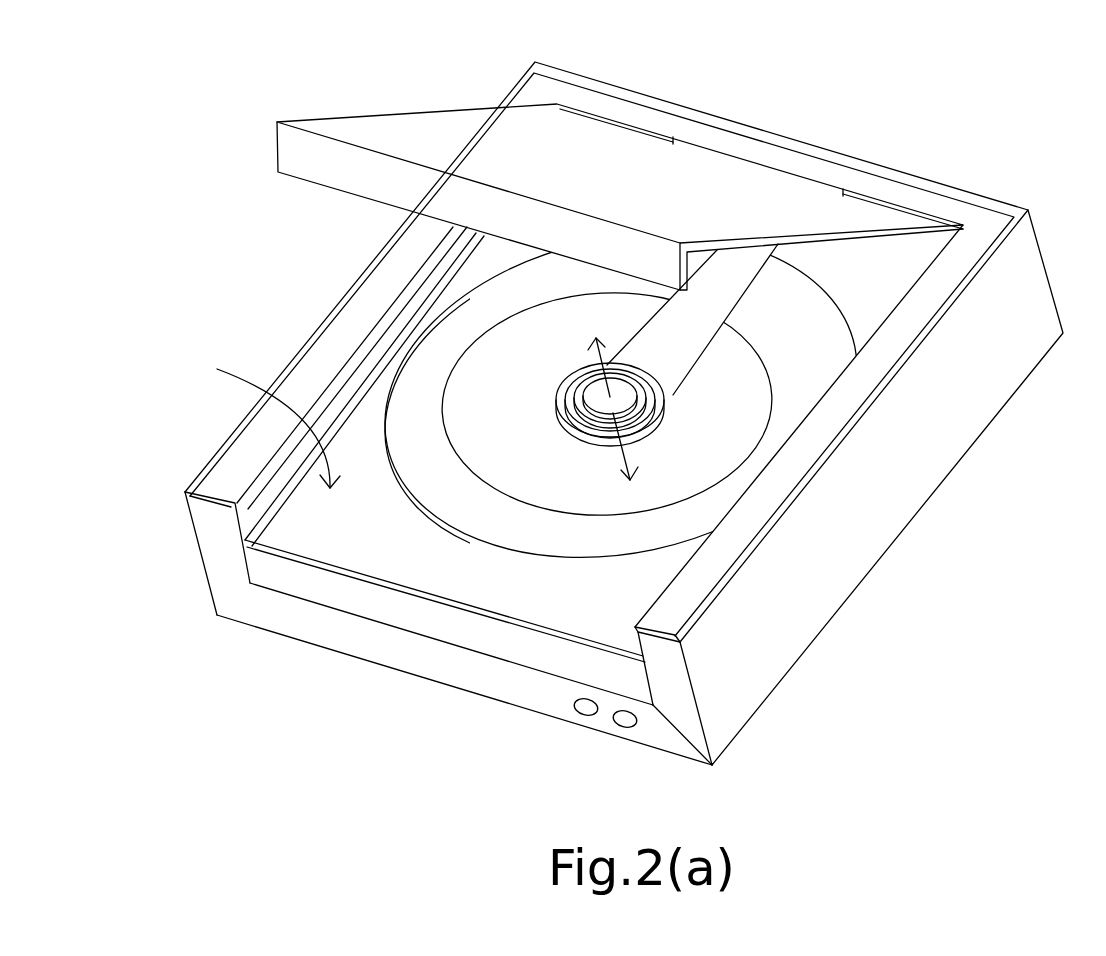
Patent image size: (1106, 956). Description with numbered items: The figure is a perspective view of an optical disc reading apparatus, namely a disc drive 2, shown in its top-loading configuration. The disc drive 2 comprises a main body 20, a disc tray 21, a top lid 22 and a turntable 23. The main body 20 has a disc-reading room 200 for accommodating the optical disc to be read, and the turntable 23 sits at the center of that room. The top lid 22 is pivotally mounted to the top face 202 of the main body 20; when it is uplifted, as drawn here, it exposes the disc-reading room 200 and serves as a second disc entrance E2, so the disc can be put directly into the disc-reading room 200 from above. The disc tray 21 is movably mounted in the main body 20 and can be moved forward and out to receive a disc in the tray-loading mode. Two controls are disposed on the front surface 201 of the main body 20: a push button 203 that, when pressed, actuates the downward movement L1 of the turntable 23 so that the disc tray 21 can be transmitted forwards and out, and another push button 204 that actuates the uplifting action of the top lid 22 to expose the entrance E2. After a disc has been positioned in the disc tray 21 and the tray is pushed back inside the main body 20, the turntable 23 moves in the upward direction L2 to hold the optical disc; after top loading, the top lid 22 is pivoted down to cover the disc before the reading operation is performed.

The disc drive 2 is at (954, 67).
The main body 20 is at (805, 603).
The disc-reading room 200 is at (508, 520).
The front surface 201 is at (283, 613).
The top face 202 is at (980, 225).
The push button 203 is at (575, 703).
The push button 204 is at (628, 722).
The disc tray 21 is at (497, 640).
The top lid 22 is at (443, 148).
The turntable 23 is at (573, 397).
The second disc entrance E2 is at (257, 422).
The downward movement L1 is at (646, 448).
The upward direction L2 is at (581, 354).